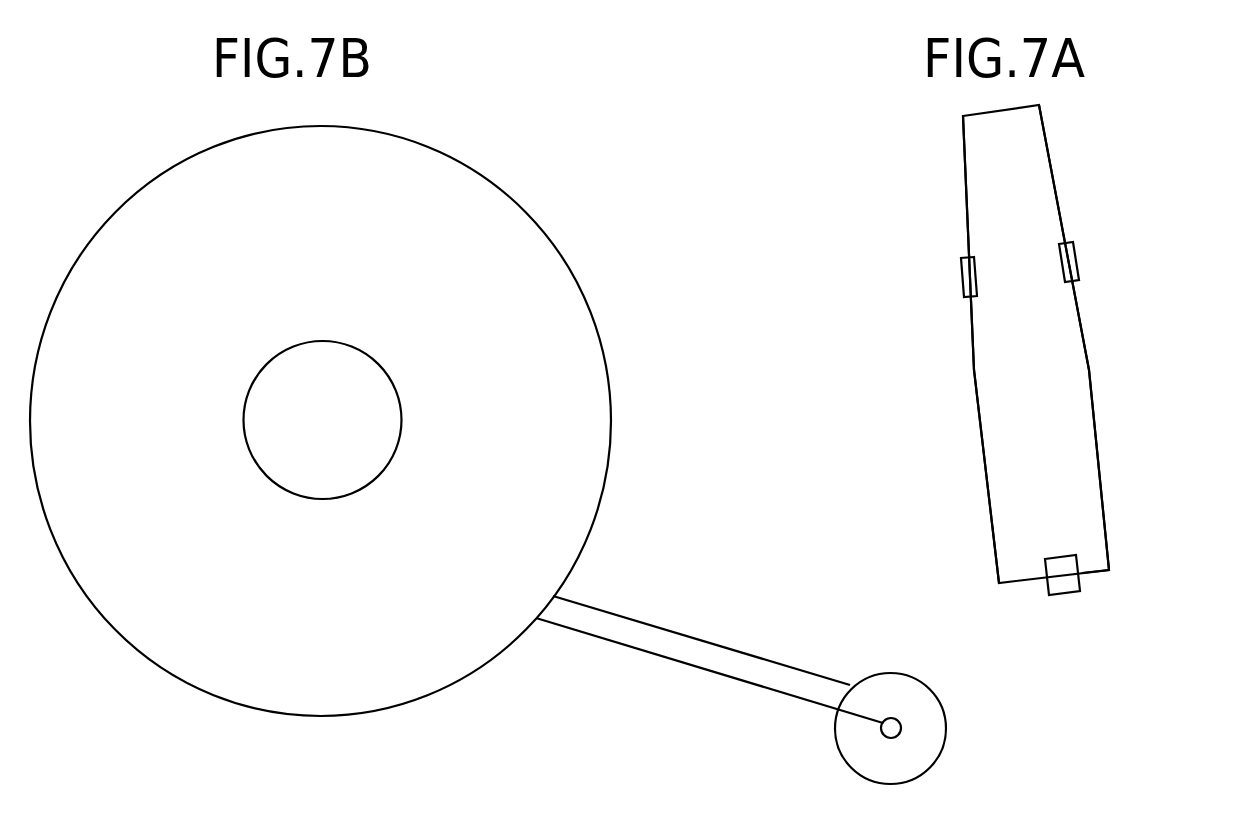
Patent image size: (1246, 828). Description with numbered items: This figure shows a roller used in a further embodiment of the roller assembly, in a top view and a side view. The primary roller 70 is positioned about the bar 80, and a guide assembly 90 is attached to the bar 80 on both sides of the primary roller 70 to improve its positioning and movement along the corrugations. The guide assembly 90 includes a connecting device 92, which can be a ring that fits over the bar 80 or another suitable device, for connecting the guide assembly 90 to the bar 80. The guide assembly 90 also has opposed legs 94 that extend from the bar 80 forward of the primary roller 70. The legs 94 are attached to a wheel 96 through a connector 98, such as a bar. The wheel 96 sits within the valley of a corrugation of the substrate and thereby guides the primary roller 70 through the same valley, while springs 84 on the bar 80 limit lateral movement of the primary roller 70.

In FIG. 7B, the primary roller 70 is at (497, 208).
In FIG. 7B, the bar 80 is at (311, 422).
In FIG. 7B, the springs 84 is at (401, 428).
In FIG. 7B, the guide assembly 90 is at (725, 633).
In FIG. 7A, the guide assembly 90 is at (1067, 344).
In FIG. 7A, the connecting device 92 is at (1068, 262).
In FIG. 7A, the legs 94 is at (986, 467).
In FIG. 7B, the wheel 96 is at (910, 691).
In FIG. 7A, the wheel 96 is at (1068, 596).
In FIG. 7B, the connector 98 is at (901, 728).
In FIG. 7A, the connector 98 is at (1092, 576).